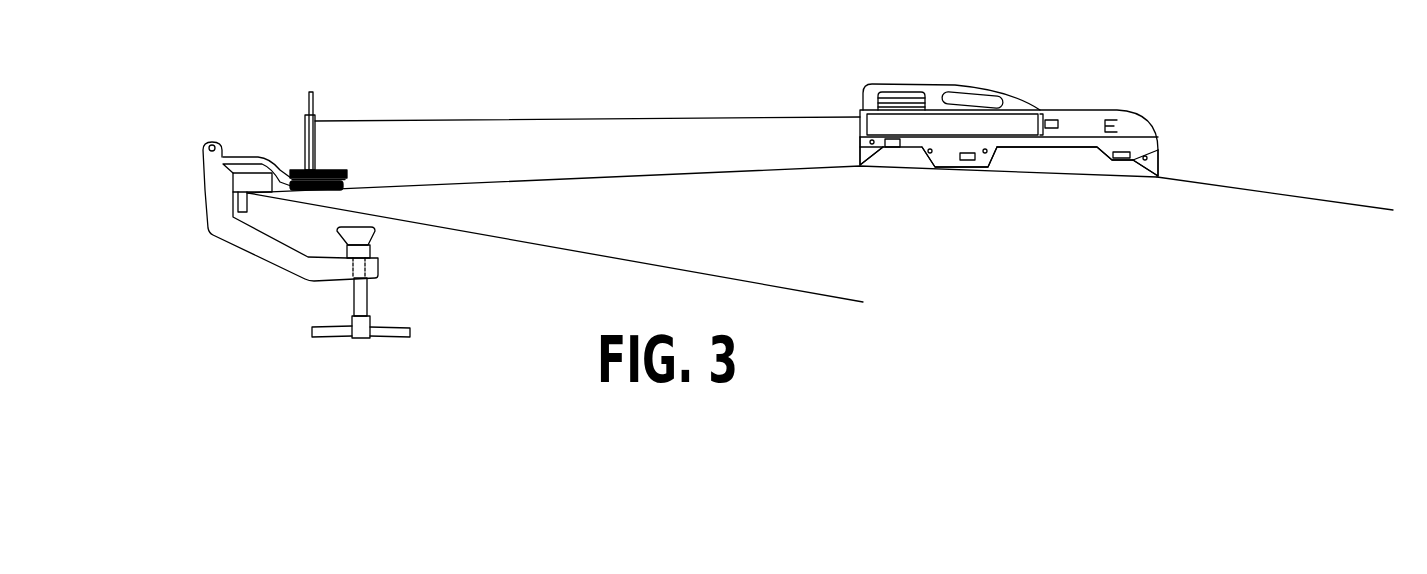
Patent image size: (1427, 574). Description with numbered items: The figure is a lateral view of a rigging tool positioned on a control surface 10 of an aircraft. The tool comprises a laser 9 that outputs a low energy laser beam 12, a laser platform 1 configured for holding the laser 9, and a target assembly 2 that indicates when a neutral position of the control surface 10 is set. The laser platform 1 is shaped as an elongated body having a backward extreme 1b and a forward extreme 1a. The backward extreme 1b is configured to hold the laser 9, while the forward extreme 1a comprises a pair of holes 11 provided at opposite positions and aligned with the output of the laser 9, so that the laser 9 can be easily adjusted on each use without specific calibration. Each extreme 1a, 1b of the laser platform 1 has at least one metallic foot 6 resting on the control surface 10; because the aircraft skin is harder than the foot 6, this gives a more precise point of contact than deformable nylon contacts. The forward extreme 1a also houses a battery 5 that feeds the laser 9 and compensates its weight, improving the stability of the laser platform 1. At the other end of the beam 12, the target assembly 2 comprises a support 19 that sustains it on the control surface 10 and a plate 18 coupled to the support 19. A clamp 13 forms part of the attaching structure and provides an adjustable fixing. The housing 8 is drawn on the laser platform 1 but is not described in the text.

The laser platform 1 is at (1003, 138).
The forward extreme 1a is at (955, 174).
The backward extreme 1b is at (1052, 181).
The target assembly 2 is at (324, 111).
The battery 5 is at (895, 103).
The metallic foot 6 is at (861, 166).
The housing 8 is at (960, 92).
The laser 9 is at (1067, 117).
The control surface 10 is at (1198, 180).
The pair of holes 11 is at (855, 117).
The laser beam 12 is at (499, 118).
The clamp 13 is at (212, 190).
The plate 18 is at (313, 107).
The support 19 is at (313, 157).